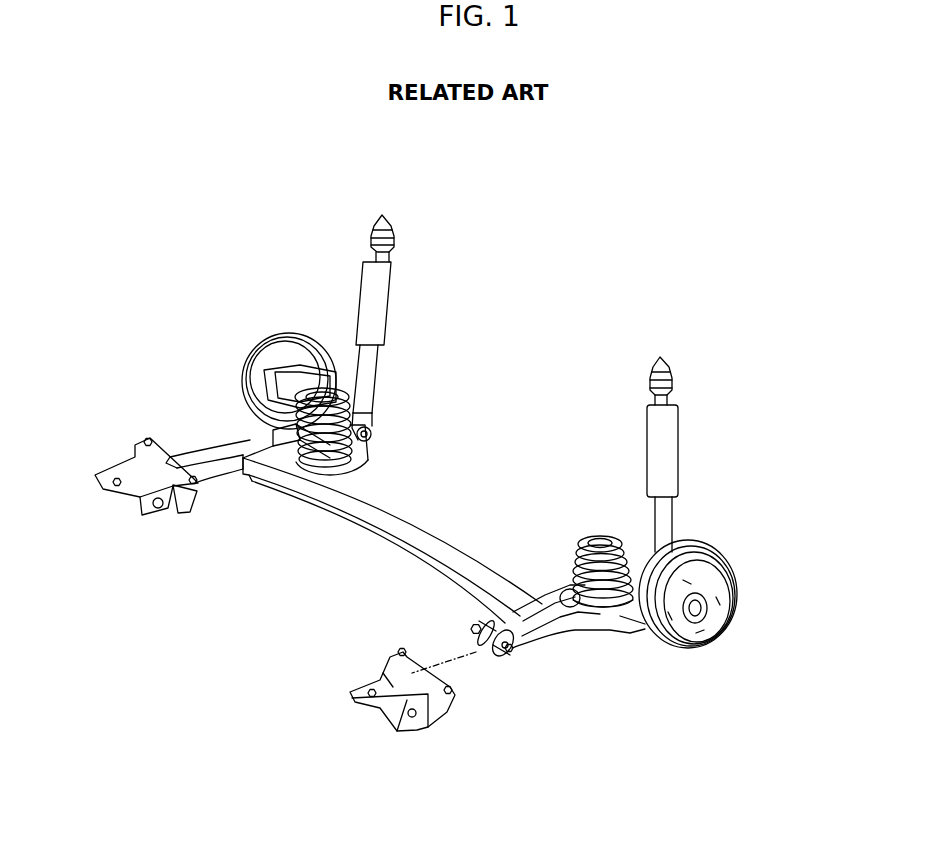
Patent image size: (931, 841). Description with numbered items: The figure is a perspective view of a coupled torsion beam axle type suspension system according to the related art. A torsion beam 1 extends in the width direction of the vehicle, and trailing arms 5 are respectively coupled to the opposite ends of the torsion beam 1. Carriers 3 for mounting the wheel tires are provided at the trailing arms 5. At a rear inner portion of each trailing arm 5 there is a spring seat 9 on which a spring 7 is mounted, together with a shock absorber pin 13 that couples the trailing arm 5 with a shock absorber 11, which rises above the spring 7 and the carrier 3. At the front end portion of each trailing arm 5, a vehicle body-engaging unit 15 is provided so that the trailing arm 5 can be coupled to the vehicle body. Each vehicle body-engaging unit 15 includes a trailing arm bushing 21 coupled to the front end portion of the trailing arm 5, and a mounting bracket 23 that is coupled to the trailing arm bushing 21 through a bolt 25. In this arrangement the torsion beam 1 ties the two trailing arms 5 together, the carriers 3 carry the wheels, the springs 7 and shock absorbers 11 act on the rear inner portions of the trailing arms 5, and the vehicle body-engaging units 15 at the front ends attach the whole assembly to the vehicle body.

The torsion beam 1 is at (432, 540).
The carrier 3 is at (290, 340).
The trailing arm 5 is at (246, 440).
The spring 7 is at (360, 405).
The spring seat 9 is at (375, 457).
The shock absorber 11 is at (378, 298).
The shock absorber pin 13 is at (378, 433).
The vehicle body-engaging unit 15 is at (197, 516).
The trailing arm bushing 21 is at (480, 637).
The mounting bracket 23 is at (140, 517).
The bolt 25 is at (163, 512).